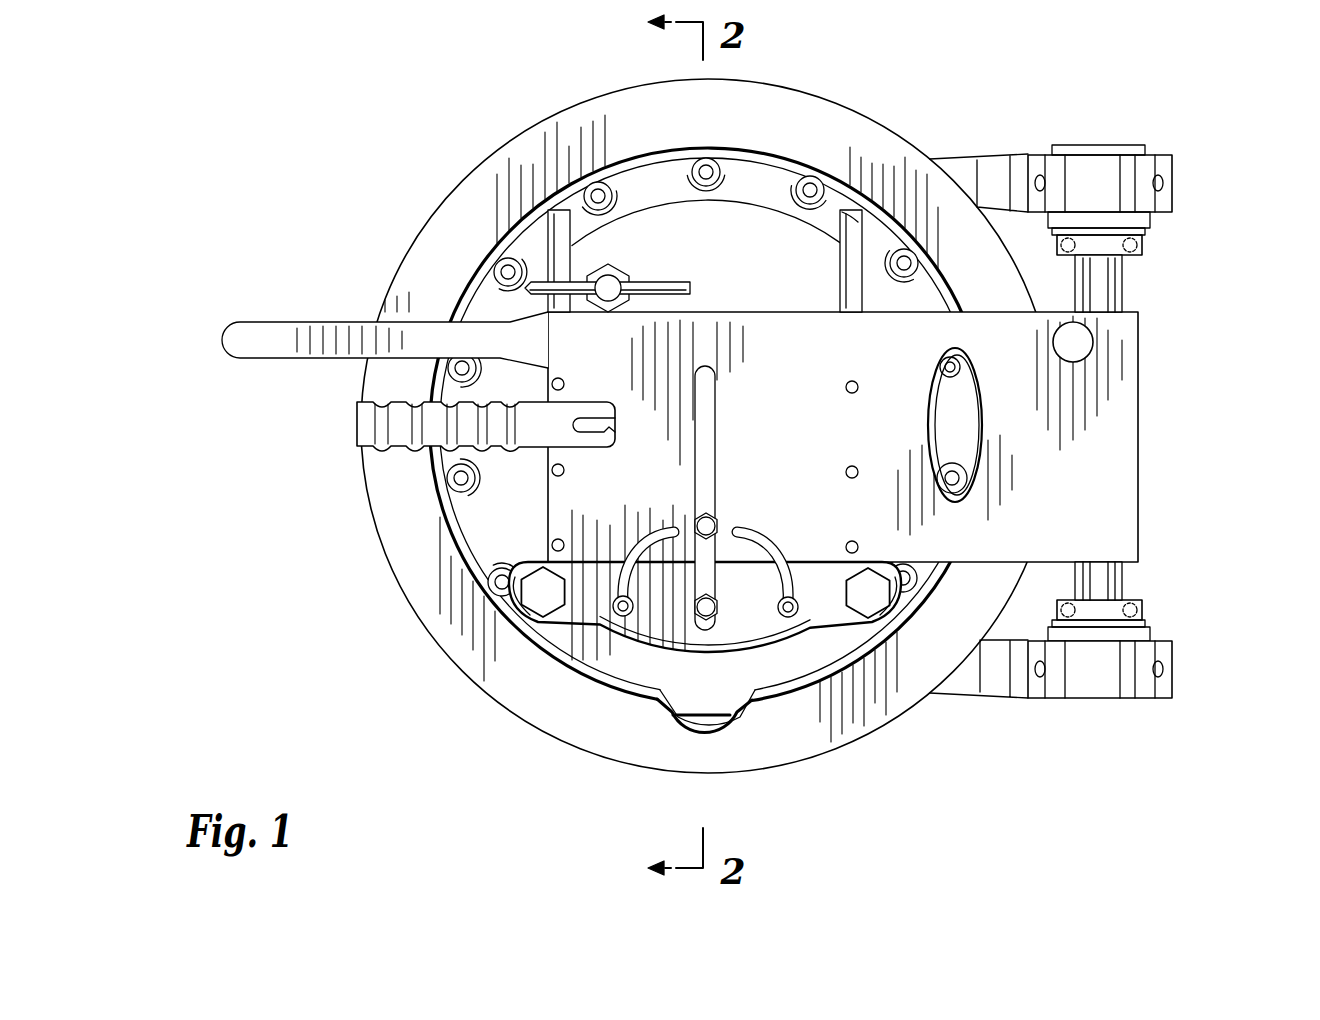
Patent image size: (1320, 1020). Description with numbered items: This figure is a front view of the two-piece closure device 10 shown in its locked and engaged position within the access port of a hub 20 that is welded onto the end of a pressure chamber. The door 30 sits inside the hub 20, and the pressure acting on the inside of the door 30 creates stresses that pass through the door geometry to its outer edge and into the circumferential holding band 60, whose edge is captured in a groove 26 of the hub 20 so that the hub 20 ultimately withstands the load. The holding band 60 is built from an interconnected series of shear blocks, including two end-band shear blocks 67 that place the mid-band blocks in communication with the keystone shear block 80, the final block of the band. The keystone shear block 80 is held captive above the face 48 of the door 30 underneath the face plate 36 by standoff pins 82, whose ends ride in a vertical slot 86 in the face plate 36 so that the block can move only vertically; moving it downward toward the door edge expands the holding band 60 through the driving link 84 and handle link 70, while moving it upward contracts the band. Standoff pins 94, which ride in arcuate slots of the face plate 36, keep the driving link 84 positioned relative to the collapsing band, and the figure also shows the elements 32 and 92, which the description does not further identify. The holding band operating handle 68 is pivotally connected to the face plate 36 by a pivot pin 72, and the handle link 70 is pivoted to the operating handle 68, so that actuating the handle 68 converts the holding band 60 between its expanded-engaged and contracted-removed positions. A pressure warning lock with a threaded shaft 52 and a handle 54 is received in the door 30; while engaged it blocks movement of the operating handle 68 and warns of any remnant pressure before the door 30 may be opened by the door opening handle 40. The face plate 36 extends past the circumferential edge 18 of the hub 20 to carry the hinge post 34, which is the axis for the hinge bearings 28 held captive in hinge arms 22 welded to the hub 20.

The two-piece closure device 10 is at (416, 191).
The circumferential edge 18 is at (862, 104).
The hub 20 is at (885, 160).
The hinge arms 22 is at (1130, 168).
The groove 26 is at (455, 292).
The hinge bearing 28 is at (1142, 248).
The door 30 is at (752, 303).
The guide post 32 is at (845, 262).
The hinge post 34 is at (1125, 290).
The face plate 36 is at (887, 345).
The door opening handle 40 is at (375, 428).
The face 48 is at (727, 230).
The threaded shaft 52 is at (636, 265).
The handle 54 is at (672, 290).
The circumferential holding band 60 is at (627, 147).
The end-band shear blocks 67 is at (568, 633).
The holding band operating handle 68 is at (258, 335).
The handle link 70 is at (705, 418).
The pivot pin 72 is at (1078, 345).
The keystone shear block 80 is at (706, 690).
The standoff pins 82 is at (709, 522).
The driving link 84 is at (575, 617).
The vertical slot 86 is at (712, 388).
The bracket 92 is at (786, 622).
The standoff pins 94 is at (770, 540).